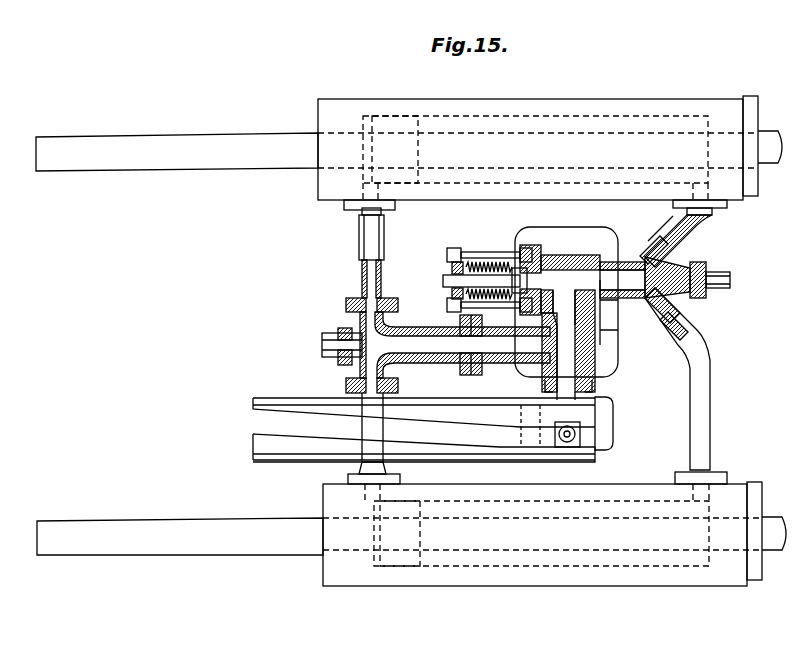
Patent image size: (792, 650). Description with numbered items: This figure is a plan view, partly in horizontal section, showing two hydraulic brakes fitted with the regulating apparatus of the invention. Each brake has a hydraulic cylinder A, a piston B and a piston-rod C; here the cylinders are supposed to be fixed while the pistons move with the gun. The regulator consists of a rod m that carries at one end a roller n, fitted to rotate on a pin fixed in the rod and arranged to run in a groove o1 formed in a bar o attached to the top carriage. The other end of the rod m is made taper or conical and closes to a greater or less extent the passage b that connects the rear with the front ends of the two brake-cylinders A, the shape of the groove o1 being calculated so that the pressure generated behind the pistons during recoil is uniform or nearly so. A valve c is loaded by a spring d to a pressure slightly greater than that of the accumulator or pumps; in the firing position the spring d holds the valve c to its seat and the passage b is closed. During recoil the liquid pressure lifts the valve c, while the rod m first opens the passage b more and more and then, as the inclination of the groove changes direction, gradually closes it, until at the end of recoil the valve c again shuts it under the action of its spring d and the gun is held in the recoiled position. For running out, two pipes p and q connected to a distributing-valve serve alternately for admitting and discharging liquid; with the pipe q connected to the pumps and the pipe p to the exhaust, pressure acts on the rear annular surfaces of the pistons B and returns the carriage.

The hydraulic cylinder A is at (552, 341).
The piston B is at (536, 341).
The piston-rod C is at (398, 344).
The passage b is at (635, 339).
The valve c is at (557, 259).
The spring d is at (488, 273).
The rod m is at (570, 327).
The roller n is at (577, 431).
The bar o is at (424, 434).
The groove o1 is at (433, 423).
The pipe p is at (334, 346).
The pipe q is at (728, 280).